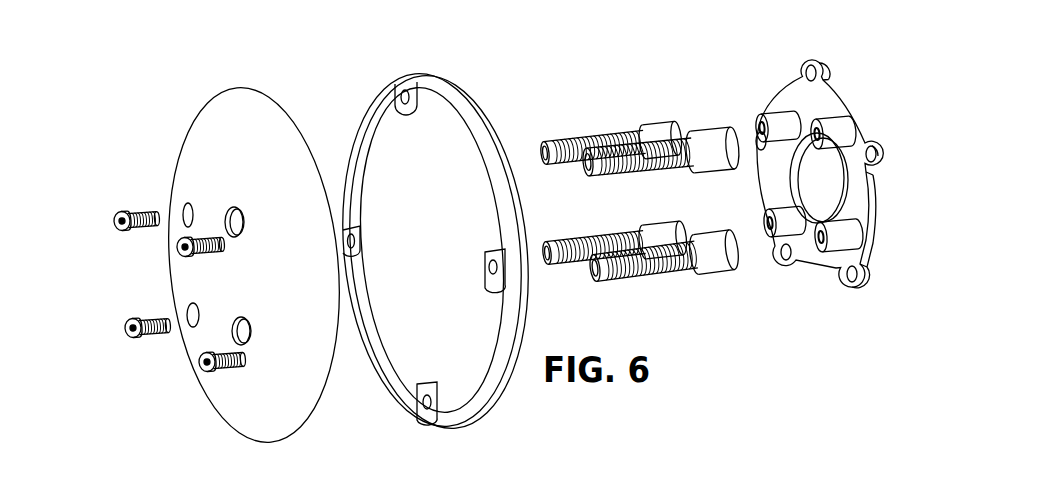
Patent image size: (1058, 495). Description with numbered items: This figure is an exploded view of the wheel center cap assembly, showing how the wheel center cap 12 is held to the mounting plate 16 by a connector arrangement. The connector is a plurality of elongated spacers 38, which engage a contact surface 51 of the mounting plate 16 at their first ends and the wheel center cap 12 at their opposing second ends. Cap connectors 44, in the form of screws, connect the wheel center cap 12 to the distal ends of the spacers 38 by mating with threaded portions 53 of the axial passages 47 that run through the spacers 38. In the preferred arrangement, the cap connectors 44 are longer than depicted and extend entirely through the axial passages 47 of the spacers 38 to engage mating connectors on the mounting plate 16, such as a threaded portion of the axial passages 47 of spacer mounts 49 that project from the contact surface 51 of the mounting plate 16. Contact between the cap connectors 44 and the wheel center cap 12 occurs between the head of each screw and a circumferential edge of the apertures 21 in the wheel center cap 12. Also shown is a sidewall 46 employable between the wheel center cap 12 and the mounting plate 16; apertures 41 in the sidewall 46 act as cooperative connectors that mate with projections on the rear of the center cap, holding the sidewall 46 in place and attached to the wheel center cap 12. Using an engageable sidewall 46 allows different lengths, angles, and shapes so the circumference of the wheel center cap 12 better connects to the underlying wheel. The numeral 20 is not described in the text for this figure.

The wheel center cap 12 is at (223, 130).
The apertures 21 is at (237, 222).
The cap connectors 44 is at (142, 212).
The sidewall 46 is at (473, 113).
The apertures 41 is at (405, 97).
The spacers 38 is at (650, 148).
The mounting plate 16 is at (832, 105).
The mounting hole 20 is at (810, 72).
The contact surface 51 is at (858, 202).
The axial passages 47 is at (763, 122).
The threaded portions 53 is at (818, 135).
The spacer mounts 49 is at (838, 240).